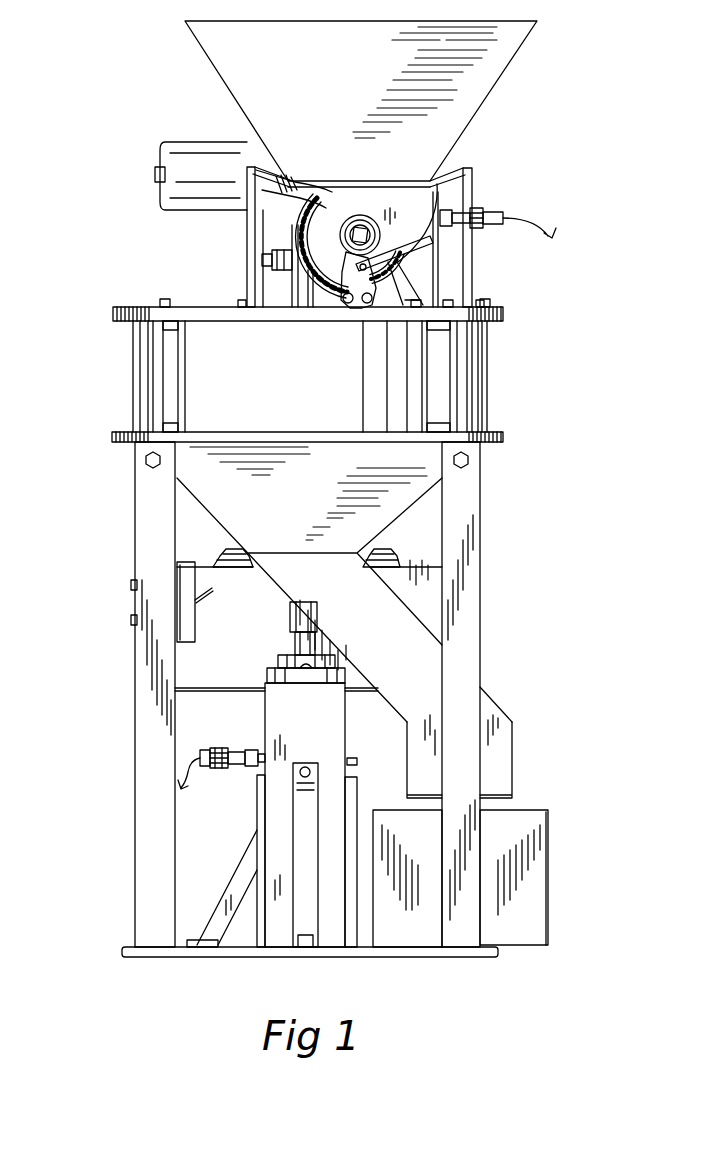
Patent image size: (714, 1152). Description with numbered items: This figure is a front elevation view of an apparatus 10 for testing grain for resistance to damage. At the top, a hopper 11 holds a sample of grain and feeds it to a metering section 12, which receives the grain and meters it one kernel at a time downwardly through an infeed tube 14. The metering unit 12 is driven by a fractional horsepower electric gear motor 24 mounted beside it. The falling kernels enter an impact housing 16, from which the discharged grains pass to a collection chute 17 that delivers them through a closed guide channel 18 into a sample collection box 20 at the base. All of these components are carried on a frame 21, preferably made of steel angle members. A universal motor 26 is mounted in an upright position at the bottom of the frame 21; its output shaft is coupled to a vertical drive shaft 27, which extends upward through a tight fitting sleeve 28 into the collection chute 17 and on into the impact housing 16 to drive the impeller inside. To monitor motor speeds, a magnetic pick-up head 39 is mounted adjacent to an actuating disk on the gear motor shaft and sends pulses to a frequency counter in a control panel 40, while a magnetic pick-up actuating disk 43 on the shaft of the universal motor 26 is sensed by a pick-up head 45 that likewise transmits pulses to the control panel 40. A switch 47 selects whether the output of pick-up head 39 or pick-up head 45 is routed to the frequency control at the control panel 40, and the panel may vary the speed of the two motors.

The apparatus for testing grain for resistance to damage 10 is at (490, 390).
The hopper 11 is at (491, 85).
The metering section 12 is at (423, 260).
The infeed tube 14 is at (288, 300).
The impact housing 16 is at (133, 378).
The collection chute 17 is at (390, 523).
The closed guide channel 18 is at (510, 717).
The sample collection box 20 is at (548, 900).
The frame 21 is at (480, 660).
The electric gear motor 24 is at (190, 140).
The universal motor 26 is at (256, 830).
The vertical drive shaft 27 is at (295, 645).
The sleeve 28 is at (290, 622).
The magnetic pick-up head 39 is at (483, 212).
The control panel 40 is at (213, 690).
The magnetic pick-up actuating disk 43 is at (350, 758).
The pick-up head 45 is at (222, 770).
The switch 47 is at (187, 560).